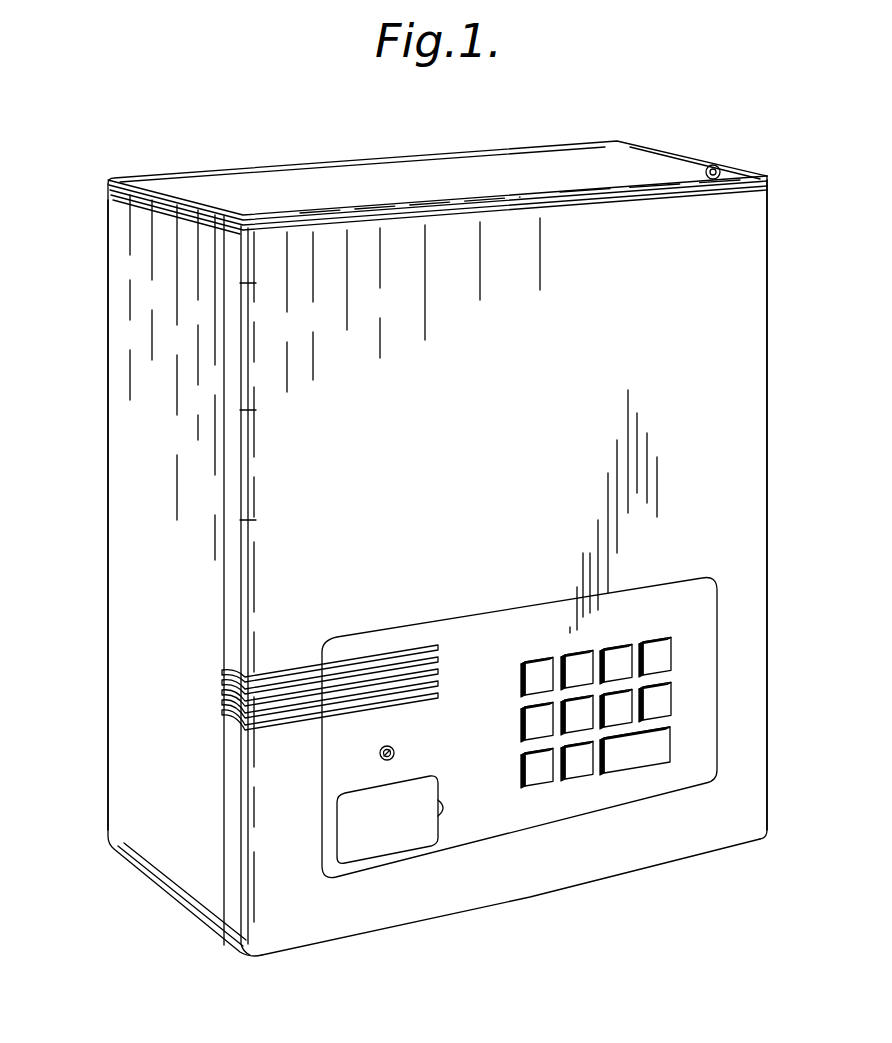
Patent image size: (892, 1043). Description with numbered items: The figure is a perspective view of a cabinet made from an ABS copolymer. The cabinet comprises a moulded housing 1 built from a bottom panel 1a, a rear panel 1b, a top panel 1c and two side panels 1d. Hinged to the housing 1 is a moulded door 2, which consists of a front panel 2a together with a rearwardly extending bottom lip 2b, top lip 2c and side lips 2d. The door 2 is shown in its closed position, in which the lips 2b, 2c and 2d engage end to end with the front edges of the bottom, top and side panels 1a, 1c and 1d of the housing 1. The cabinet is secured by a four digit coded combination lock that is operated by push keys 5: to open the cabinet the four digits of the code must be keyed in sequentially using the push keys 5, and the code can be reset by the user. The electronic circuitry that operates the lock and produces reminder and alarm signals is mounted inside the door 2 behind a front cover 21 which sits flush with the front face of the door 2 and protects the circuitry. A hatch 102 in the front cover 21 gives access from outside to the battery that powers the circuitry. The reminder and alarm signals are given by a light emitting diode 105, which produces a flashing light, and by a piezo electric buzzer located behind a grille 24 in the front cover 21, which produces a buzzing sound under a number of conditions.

The moulded housing 1 is at (104, 322).
The bottom panel 1a is at (157, 894).
The rear panel 1b is at (104, 507).
The top panel 1c is at (364, 183).
The side panels 1d is at (769, 335).
The moulded door 2 is at (481, 438).
The front panel 2a is at (736, 503).
The bottom lip 2b is at (501, 907).
The top lip 2c is at (233, 797).
The side lips 2d is at (502, 196).
The push keys 5 is at (672, 651).
The front cover 21 is at (693, 602).
The grille 24 is at (220, 711).
The hatch 102 is at (359, 846).
The light emitting diode (LED) 105 is at (392, 767).